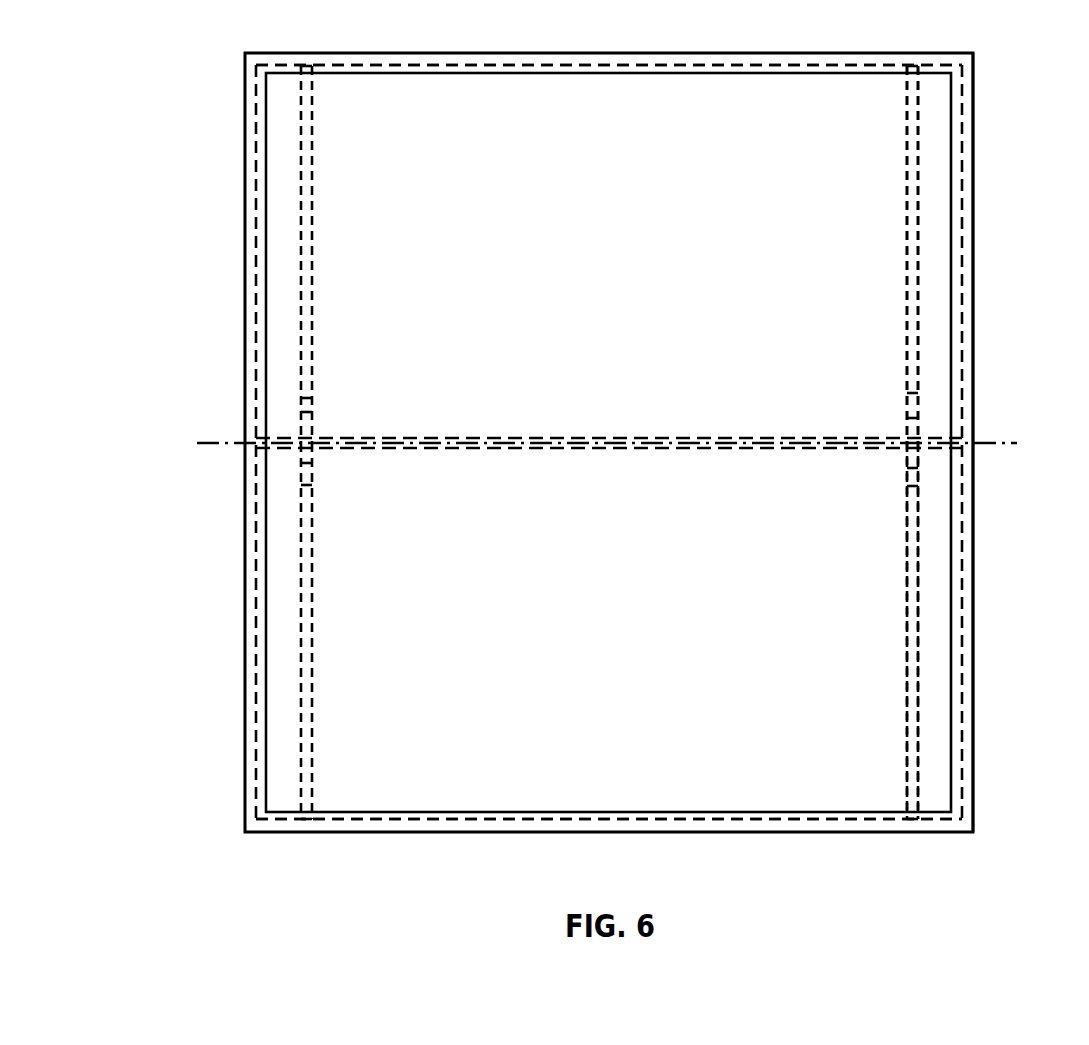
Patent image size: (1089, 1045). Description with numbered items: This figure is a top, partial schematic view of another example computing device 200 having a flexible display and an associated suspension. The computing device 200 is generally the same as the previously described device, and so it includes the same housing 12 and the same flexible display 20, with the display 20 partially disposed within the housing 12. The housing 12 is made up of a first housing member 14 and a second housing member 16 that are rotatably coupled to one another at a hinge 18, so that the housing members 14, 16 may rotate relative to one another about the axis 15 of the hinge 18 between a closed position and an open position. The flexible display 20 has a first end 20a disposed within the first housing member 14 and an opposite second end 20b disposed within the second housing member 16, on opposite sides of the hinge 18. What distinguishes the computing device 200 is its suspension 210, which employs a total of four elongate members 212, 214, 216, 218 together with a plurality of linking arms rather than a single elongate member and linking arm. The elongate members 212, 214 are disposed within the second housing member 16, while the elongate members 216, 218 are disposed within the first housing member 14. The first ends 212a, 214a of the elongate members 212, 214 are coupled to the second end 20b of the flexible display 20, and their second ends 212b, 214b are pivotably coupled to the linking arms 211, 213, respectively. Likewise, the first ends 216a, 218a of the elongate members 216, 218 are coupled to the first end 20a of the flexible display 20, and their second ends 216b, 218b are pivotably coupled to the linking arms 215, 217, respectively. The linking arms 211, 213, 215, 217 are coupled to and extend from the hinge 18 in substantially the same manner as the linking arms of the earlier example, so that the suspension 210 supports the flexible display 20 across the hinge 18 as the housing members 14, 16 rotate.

The computing device 200 is at (172, 93).
The housing 12 is at (236, 207).
The first housing member 14 is at (975, 740).
The second housing member 16 is at (975, 104).
The flexible display 20 is at (256, 272).
The first end 20a is at (578, 828).
The second end 20b is at (549, 58).
The axis 15 is at (230, 442).
The hinge 18 is at (283, 449).
The suspension 210 is at (938, 251).
The linking arm 211 is at (907, 418).
The elongate member 212 is at (905, 148).
The first end 212a is at (912, 66).
The second end 212b is at (907, 393).
The linking arm 213 is at (312, 412).
The elongate member 214 is at (313, 160).
The first end 214a is at (305, 68).
The second end 214b is at (312, 398).
The linking arm 215 is at (312, 463).
The elongate member 216 is at (313, 620).
The first end 216a is at (303, 820).
The second end 216b is at (306, 485).
The linking arm 217 is at (907, 468).
The elongate member 218 is at (905, 612).
The first end 218a is at (912, 822).
The second end 218b is at (907, 486).